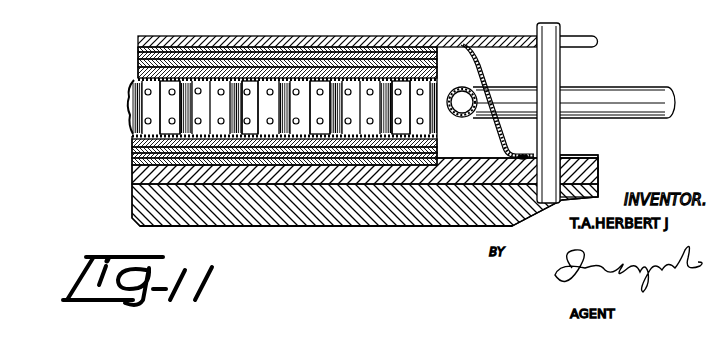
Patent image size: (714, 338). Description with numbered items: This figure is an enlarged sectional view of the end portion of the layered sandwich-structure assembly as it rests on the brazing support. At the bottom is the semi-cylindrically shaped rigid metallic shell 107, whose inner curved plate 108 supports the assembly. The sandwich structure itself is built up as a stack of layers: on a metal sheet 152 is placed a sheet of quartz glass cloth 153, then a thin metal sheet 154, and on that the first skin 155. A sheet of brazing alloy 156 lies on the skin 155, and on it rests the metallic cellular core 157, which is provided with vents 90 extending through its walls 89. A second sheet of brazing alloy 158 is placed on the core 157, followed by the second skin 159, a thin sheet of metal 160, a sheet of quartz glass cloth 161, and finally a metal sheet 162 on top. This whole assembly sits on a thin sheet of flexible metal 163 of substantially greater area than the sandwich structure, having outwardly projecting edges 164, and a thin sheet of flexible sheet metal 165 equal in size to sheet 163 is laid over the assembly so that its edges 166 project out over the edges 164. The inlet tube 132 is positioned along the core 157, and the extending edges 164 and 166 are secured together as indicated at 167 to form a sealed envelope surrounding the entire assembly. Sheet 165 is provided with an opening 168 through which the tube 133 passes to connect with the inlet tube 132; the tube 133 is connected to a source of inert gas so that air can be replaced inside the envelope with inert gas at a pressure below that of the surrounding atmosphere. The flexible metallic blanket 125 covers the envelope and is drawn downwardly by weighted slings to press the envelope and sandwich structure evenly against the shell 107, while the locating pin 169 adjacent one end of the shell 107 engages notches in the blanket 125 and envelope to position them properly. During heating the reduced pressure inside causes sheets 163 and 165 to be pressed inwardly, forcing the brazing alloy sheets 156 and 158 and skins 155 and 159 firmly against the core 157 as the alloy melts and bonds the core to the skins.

The flexible metallic blanket 125 is at (187, 35).
The thin sheet of flexible sheet metal 165 is at (138, 42).
The metal sheet 162 is at (138, 50).
The sheet of quartz glass cloth 161 is at (138, 55).
The thin sheet of metal 160 is at (138, 62).
The second skin 159 is at (138, 71).
The second sheet of brazing alloy 158 is at (137, 79).
The metallic cellular core 157 is at (131, 112).
The sheet of brazing alloy 156 is at (132, 136).
The skin 155 is at (132, 143).
The thin metal sheet 154 is at (132, 150).
The sheet of quartz glass cloth 153 is at (132, 156).
The metal sheet 152 is at (132, 161).
The thin sheet of flexible metal 163 is at (132, 173).
The rigid metallic shell 107 is at (132, 208).
The inner curved plate 108 is at (341, 227).
The vents 90 is at (172, 114).
The walls 89 is at (270, 107).
The openings 168 is at (484, 84).
The inlet tube 132 is at (449, 121).
The secured edges 167 is at (524, 156).
The locating pin 169 is at (562, 72).
The tube 133 is at (650, 88).
The edges 166 is at (600, 156).
The outwardly projecting edges 164 is at (600, 161).